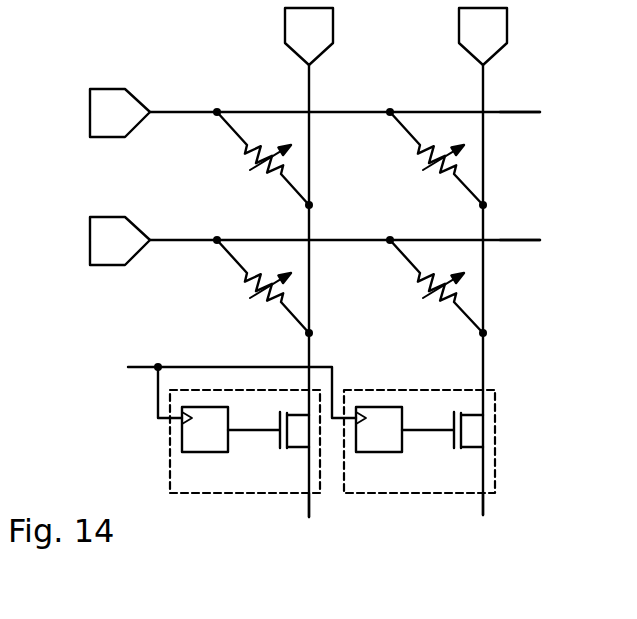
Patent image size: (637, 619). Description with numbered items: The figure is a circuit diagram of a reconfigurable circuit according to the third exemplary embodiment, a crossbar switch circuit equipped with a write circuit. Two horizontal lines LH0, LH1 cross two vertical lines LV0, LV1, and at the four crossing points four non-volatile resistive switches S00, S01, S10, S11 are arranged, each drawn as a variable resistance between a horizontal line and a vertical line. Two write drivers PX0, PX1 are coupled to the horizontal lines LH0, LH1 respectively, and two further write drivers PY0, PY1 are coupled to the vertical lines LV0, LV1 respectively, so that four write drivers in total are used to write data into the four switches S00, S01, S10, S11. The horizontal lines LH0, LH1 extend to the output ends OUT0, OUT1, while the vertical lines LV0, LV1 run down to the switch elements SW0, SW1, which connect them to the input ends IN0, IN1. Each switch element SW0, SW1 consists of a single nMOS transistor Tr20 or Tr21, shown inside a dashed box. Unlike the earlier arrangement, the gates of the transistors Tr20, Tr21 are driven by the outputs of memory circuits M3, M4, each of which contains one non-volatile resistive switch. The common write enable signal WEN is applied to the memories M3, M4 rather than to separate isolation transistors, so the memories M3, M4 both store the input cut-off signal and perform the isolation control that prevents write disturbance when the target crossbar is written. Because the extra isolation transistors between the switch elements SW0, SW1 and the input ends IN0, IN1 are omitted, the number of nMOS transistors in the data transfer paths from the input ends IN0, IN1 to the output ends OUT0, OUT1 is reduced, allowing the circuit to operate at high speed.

The write driver PX0 is at (120, 113).
The write driver PX1 is at (120, 241).
The write driver PY0 is at (309, 36).
The write driver PY1 is at (483, 36).
The horizontal line LH0 is at (345, 100).
The horizontal line LH1 is at (345, 228).
The vertical line LV0 is at (329, 291).
The vertical line LV1 is at (503, 290).
The output end OUT0 is at (560, 114).
The output end OUT1 is at (560, 242).
The input end IN0 is at (317, 521).
The input end IN1 is at (487, 521).
The NVRS S00 is at (255, 158).
The NVRS S01 is at (432, 158).
The NVRS S10 is at (255, 286).
The NVRS S11 is at (432, 286).
The write enable signal WEN is at (209, 384).
The switch element SW0 is at (214, 441).
The switch element SW1 is at (450, 441).
The memory circuit M3 is at (205, 445).
The memory circuit M4 is at (379, 445).
The nMOS transistor Tr20 is at (268, 446).
The nMOS transistor Tr21 is at (442, 446).